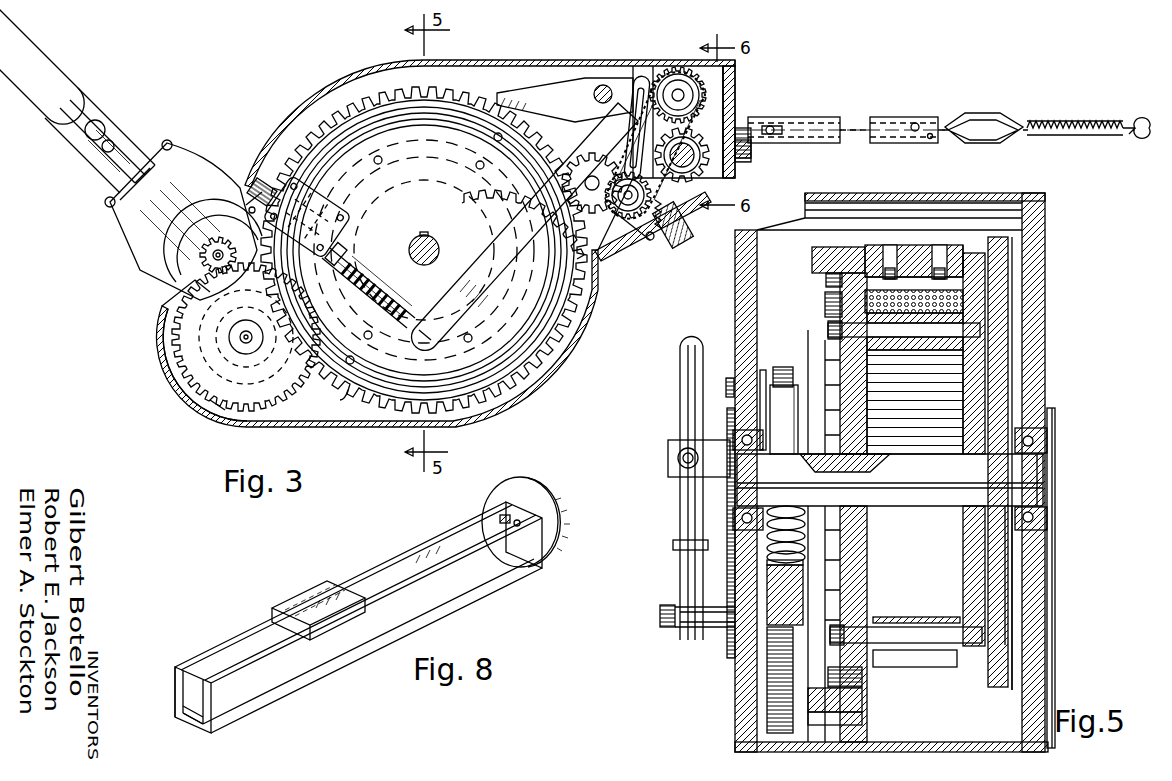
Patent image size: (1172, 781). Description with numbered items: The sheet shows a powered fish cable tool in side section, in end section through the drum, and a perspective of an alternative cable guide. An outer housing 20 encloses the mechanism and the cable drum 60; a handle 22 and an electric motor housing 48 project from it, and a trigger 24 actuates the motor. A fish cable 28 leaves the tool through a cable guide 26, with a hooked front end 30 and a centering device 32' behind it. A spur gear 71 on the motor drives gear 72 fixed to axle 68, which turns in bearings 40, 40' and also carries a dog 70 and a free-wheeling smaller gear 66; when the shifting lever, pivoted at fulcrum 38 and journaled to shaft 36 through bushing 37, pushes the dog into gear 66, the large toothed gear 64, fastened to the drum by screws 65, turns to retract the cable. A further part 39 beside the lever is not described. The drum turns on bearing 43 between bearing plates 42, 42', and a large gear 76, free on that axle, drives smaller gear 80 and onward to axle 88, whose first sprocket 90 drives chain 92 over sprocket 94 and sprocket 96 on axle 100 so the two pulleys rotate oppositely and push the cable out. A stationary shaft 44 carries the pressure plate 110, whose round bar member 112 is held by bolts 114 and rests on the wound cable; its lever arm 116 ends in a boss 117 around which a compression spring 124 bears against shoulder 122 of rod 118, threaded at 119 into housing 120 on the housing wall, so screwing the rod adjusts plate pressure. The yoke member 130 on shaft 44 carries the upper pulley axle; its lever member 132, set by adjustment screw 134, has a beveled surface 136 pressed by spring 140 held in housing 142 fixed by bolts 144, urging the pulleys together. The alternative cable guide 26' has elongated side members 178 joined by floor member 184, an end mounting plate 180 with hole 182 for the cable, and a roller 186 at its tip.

In FIG. 3, the outer housing 20 is at (521, 62).
In FIG. 5, the outer housing 20 is at (1042, 307).
In FIG. 3, the handle 22 is at (62, 66).
In FIG. 3, the trigger 24 is at (128, 128).
In FIG. 3, the cable guide 26 is at (846, 112).
In FIG. 8, the cable guide 26' is at (318, 594).
In FIG. 3, the fish cable 28 is at (930, 114).
In FIG. 5, the fish cable 28 is at (824, 304).
In FIG. 3, the front end 30 is at (1140, 121).
In FIG. 3, the tension adjuster 32' is at (983, 112).
In FIG. 5, the shaft 36 is at (660, 612).
In FIG. 3, the bearing 37 is at (243, 342).
In FIG. 5, the bearing 37 is at (672, 634).
In FIG. 5, the fulcrum 38 is at (672, 445).
In FIG. 5, the lever arm 39 is at (680, 365).
In FIG. 5, the bearing 40 is at (710, 538).
In FIG. 5, the bearing 40' is at (1067, 578).
In FIG. 5, the bearing plates 42 is at (705, 480).
In FIG. 5, the bearing 42' is at (1056, 475).
In FIG. 3, the bearing 43 is at (436, 240).
In FIG. 5, the bearing 43 is at (922, 477).
In FIG. 3, the stationary shaft 44 is at (560, 88).
In FIG. 5, the stationary shaft 44 is at (888, 255).
In FIG. 3, the motor housing 48 is at (204, 153).
In FIG. 3, the cable drum 60 is at (424, 250).
In FIG. 5, the cable drum 60 is at (840, 352).
In FIG. 3, the large toothed gear 64 is at (348, 390).
In FIG. 5, the large toothed gear 64 is at (813, 263).
In FIG. 5, the screws 65 is at (826, 283).
In FIG. 3, the smaller gear 66 is at (156, 338).
In FIG. 5, the smaller gear 66 is at (862, 704).
In FIG. 3, the axle 68 is at (250, 362).
In FIG. 3, the dog 70 is at (185, 300).
In FIG. 3, the spur gear 71 is at (205, 262).
In FIG. 3, the gear 72 is at (217, 402).
In FIG. 5, the gear 72 is at (767, 716).
In FIG. 5, the large gear 76 is at (1005, 258).
In FIG. 3, the smaller gear 80 is at (535, 224).
In FIG. 3, the axle 88 is at (692, 158).
In FIG. 3, the first sprocket 90 is at (740, 160).
In FIG. 3, the chain 92 is at (596, 166).
In FIG. 3, the sprocket 94 is at (611, 232).
In FIG. 3, the sprocket 96 is at (680, 74).
In FIG. 3, the axle 100 is at (722, 84).
In FIG. 3, the pressure plate 110 is at (477, 94).
In FIG. 5, the pressure plate 110 is at (915, 250).
In FIG. 3, the round bar member 112 is at (424, 248).
In FIG. 5, the round bar member 112 is at (956, 268).
In FIG. 3, the bolts 114 is at (424, 243).
In FIG. 3, the lever arm 116 is at (503, 214).
In FIG. 5, the lever arm 116 is at (795, 596).
In FIG. 3, the boss 117 is at (440, 300).
In FIG. 3, the rod 118 is at (350, 242).
In FIG. 5, the rod 118 is at (805, 553).
In FIG. 3, the threads 119 is at (283, 170).
In FIG. 5, the threads 119 is at (762, 365).
In FIG. 3, the threaded housing 120 is at (335, 214).
In FIG. 5, the threaded housing 120 is at (790, 398).
In FIG. 3, the shoulder 122 is at (368, 250).
In FIG. 3, the compression spring 124 is at (395, 264).
In FIG. 5, the compression spring 124 is at (805, 527).
In FIG. 3, the yoke member 130 is at (650, 88).
In FIG. 3, the lever member 132 is at (603, 150).
In FIG. 3, the adjustment screw 134 is at (650, 76).
In FIG. 3, the beveled surface 136 is at (700, 212).
In FIG. 3, the spring 140 is at (678, 242).
In FIG. 3, the housing 142 is at (684, 236).
In FIG. 3, the bolts 144 is at (651, 242).
In FIG. 8, the elongated side members 178 is at (390, 566).
In FIG. 8, the end mounting plate 180 is at (560, 528).
In FIG. 8, the hole 182 is at (520, 520).
In FIG. 8, the floor member 184 is at (188, 698).
In FIG. 8, the roller 186 is at (203, 708).